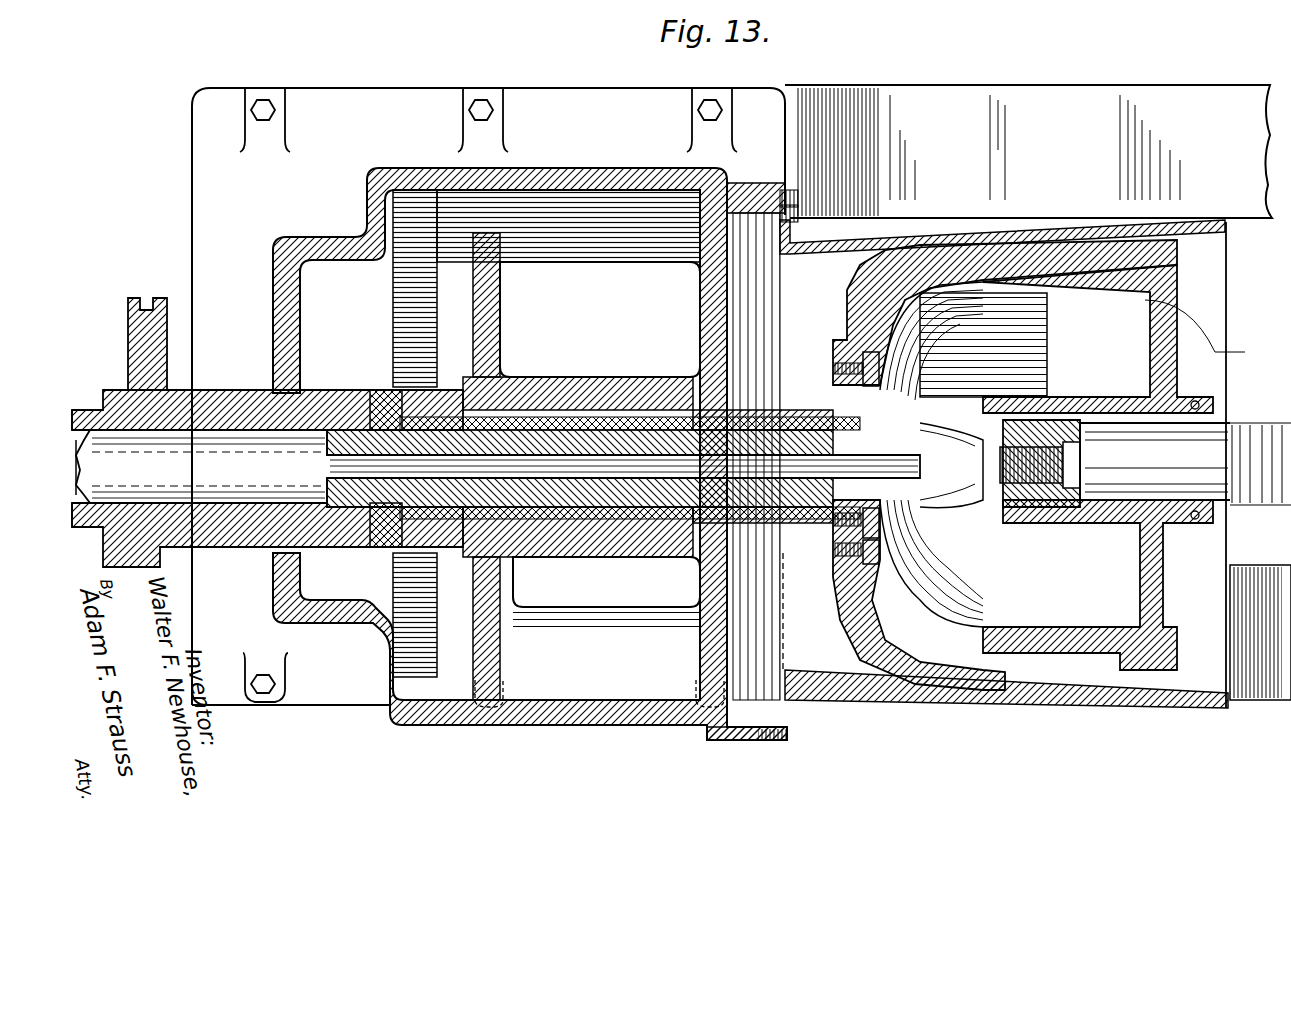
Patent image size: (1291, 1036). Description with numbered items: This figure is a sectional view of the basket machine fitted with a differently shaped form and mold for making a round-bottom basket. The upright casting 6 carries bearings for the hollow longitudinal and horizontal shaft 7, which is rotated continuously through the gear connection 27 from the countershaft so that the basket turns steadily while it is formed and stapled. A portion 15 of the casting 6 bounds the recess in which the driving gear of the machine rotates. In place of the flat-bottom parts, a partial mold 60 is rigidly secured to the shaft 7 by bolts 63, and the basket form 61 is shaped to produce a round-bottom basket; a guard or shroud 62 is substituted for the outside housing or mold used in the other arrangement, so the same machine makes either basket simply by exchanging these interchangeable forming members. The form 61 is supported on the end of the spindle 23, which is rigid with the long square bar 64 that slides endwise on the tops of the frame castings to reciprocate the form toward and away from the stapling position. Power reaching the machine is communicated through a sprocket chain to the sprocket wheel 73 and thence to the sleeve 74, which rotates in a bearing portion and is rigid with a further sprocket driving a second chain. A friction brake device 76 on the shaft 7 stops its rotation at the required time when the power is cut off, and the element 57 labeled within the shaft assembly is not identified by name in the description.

The upright casting 6 is at (568, 727).
The shaft 7 is at (220, 445).
The portion of the casting 15 is at (712, 742).
The spindle 23 is at (1115, 460).
The gear connection 27 is at (502, 316).
The motor field 57 is at (655, 470).
The partial mold 60 is at (862, 290).
The basket form 61 is at (1075, 467).
The guard or shroud 62 is at (940, 244).
The bolts 63 is at (832, 372).
The long square bar 64 is at (1038, 392).
The sprocket wheel 73 is at (158, 298).
The sleeve 74 is at (90, 410).
The friction brake device 76 is at (348, 392).